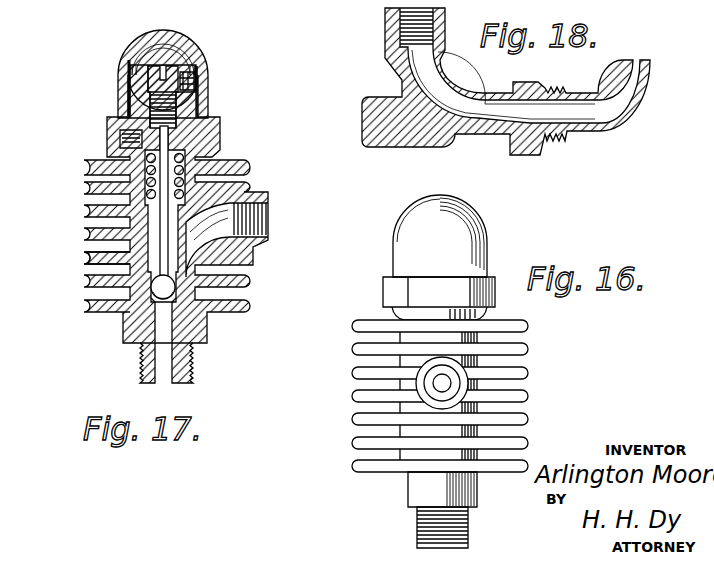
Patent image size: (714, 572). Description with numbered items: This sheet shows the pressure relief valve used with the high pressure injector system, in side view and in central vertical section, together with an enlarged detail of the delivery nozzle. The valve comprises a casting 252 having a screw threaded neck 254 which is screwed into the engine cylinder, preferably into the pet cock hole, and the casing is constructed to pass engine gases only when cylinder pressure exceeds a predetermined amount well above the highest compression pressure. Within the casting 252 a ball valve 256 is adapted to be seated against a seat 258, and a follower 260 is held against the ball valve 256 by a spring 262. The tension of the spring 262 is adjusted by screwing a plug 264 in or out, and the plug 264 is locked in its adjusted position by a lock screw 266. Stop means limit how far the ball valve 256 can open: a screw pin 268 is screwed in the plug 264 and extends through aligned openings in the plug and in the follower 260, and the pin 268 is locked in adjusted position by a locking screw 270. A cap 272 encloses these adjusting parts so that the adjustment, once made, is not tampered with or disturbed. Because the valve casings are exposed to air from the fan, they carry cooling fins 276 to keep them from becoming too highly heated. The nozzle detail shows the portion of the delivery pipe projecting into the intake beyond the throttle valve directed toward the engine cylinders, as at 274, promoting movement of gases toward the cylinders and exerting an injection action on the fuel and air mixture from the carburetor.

In FIG. 17, the casting 252 is at (182, 176).
In FIG. 17, the screw threaded neck 254 is at (190, 372).
In FIG. 18, the screw threaded neck 254 is at (539, 22).
In FIG. 16, the screw threaded neck 254 is at (430, 530).
In FIG. 17, the ball valve 256 is at (172, 283).
In FIG. 17, the seat 258 is at (160, 311).
In FIG. 17, the follower 260 is at (148, 222).
In FIG. 17, the spring 262 is at (196, 181).
In FIG. 17, the plug 264 is at (147, 88).
In FIG. 17, the lock screw 266 is at (194, 79).
In FIG. 17, the screw pin 268 is at (166, 223).
In FIG. 17, the locking screw 270 is at (195, 86).
In FIG. 17, the cap 272 is at (209, 12).
In FIG. 16, the cap 272 is at (471, 212).
In FIG. 18, the delivery pipe portion directed toward engine cylinders 274 is at (606, 111).
In FIG. 17, the cooling fins 276 is at (106, 268).
In FIG. 16, the cooling fins 276 is at (356, 396).